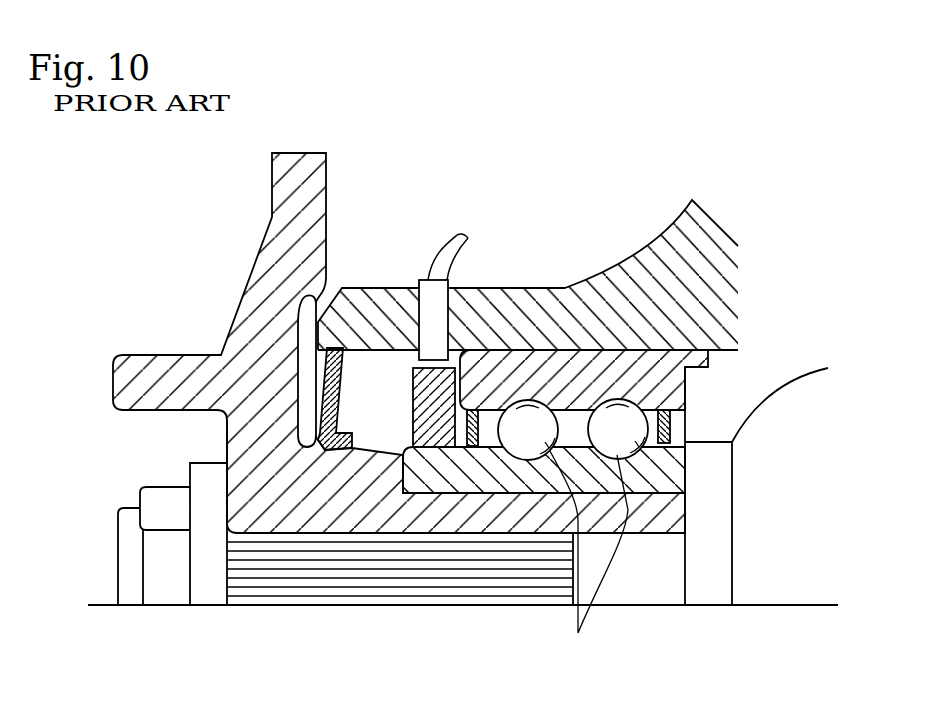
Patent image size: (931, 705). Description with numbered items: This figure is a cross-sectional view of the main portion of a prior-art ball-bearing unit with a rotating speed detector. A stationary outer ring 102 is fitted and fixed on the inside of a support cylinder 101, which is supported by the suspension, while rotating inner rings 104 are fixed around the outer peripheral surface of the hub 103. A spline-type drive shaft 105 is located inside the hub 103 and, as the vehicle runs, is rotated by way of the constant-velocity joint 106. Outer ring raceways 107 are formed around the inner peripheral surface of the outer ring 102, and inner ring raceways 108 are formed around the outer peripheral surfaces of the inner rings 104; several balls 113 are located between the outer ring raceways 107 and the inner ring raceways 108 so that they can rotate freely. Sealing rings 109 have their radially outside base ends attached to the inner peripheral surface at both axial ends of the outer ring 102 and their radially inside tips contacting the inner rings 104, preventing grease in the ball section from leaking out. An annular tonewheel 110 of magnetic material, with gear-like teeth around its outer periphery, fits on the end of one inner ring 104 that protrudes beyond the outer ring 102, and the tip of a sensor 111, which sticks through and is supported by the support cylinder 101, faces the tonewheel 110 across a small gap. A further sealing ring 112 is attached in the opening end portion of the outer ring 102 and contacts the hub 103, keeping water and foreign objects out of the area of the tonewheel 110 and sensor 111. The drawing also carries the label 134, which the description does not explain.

The support cylinder 101 is at (527, 300).
The outer ring 102 is at (580, 363).
The hub 103 is at (238, 326).
The inner rings 104 is at (437, 480).
The drive shaft 105 is at (645, 597).
The constant-velocity joint 106 is at (770, 580).
The outer ring raceways 107 is at (650, 370).
The inner ring raceways 108 is at (647, 449).
The sealing rings 109 is at (460, 419).
The tonewheel 110 is at (417, 408).
The sensor 111 is at (418, 300).
The sealing ring 112 is at (322, 393).
The balls 113 is at (588, 558).
The constant velocity joint 134 is at (173, 593).